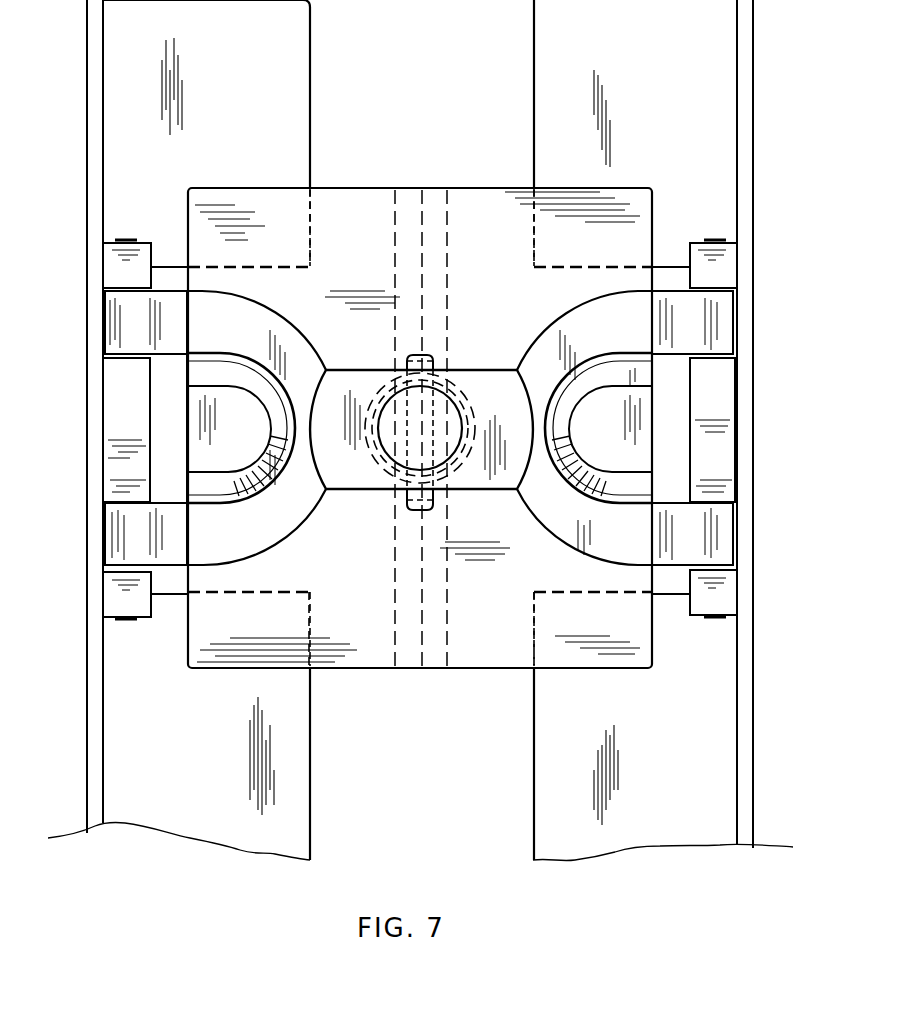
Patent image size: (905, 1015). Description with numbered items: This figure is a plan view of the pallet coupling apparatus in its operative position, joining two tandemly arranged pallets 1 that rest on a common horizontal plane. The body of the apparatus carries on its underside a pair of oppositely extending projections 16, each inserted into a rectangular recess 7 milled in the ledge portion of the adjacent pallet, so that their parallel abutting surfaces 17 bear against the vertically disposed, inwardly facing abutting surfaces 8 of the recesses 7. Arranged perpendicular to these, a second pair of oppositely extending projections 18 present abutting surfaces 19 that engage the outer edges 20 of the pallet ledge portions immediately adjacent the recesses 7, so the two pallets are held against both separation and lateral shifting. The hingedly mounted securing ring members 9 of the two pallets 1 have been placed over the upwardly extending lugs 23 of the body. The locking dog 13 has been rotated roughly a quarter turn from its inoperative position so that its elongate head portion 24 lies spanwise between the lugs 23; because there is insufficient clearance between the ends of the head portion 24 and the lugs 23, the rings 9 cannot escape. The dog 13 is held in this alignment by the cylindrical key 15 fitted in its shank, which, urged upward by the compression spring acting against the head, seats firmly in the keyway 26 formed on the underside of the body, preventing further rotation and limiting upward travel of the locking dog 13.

The pallet 1 is at (822, 243).
The rectangular recess 7 is at (163, 580).
The abutting surface 8 is at (260, 266).
The ring member 9 is at (312, 348).
The locking dog 13 is at (462, 368).
The cylindrical key 15 is at (430, 355).
The projection 16 is at (187, 278).
The abutting surface 17 is at (237, 270).
The projection 18 is at (473, 188).
The abutting surface 19 is at (313, 235).
The outer edge 20 is at (310, 143).
The lug 23 is at (207, 433).
The elongate head portion 24 is at (372, 490).
The keyway 26 is at (393, 550).